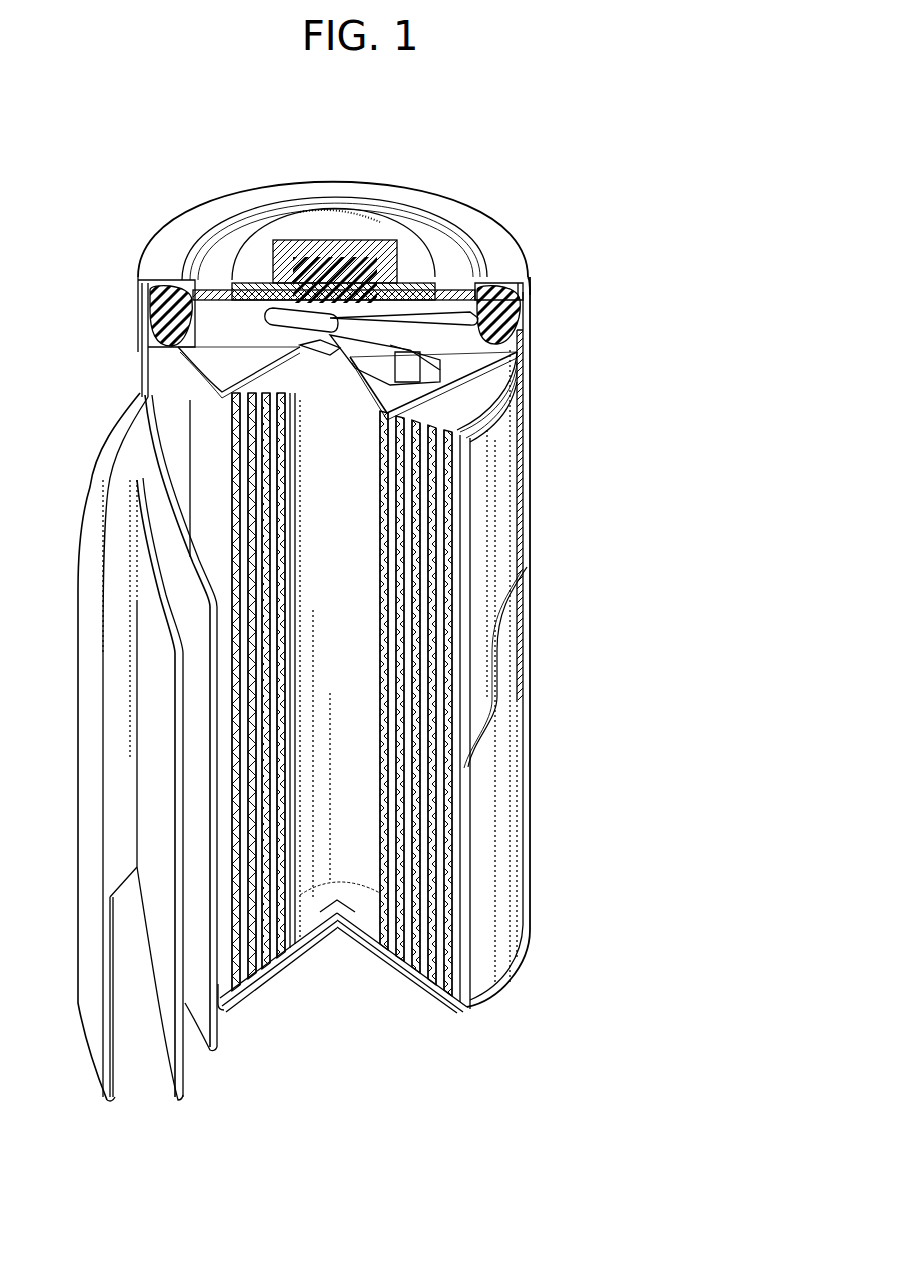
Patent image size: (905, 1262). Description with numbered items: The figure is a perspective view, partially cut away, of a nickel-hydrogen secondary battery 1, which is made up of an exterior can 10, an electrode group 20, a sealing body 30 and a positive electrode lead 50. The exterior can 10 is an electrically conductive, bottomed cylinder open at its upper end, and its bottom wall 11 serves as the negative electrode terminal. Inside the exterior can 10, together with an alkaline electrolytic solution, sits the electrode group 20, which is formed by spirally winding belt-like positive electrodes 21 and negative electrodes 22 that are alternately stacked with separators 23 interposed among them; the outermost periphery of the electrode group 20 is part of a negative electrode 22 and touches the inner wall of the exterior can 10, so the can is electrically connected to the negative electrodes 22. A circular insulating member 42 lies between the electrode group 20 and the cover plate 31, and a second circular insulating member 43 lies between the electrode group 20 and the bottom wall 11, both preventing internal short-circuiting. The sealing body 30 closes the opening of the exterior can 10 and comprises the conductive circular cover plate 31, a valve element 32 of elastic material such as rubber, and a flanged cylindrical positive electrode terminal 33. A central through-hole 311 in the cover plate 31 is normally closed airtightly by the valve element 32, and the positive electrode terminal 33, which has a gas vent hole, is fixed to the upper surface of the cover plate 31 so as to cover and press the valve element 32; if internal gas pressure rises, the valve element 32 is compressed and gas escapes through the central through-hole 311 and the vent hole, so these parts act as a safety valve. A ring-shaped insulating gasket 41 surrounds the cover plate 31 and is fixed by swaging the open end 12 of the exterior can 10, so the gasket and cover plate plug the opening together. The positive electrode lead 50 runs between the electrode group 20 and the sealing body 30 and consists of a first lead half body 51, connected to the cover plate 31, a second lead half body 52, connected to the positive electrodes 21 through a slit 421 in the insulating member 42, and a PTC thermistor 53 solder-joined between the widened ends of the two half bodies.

The nickel-hydrogen secondary battery 1 is at (526, 176).
The exterior can 10 is at (530, 626).
The bottom wall 11 is at (273, 968).
The open end 12 is at (497, 250).
The electrode group 20 is at (512, 522).
The positive electrodes 21 is at (223, 1043).
The negative electrodes 22 is at (117, 1090).
The separators 23 is at (187, 1080).
The sealing body 30 is at (441, 258).
The cover plate 31 is at (218, 283).
The central through-hole 311 is at (515, 308).
The valve element 32 is at (310, 270).
The positive electrode terminal 33 is at (353, 220).
The insulating gasket 41 is at (155, 316).
The insulating member 42 is at (517, 394).
The slit 421 is at (487, 408).
The insulating member 43 is at (355, 908).
The positive electrode lead 50 is at (508, 360).
The first lead half body 51 is at (273, 323).
The second lead half body 52 is at (363, 360).
The PTC thermistor 53 is at (316, 348).